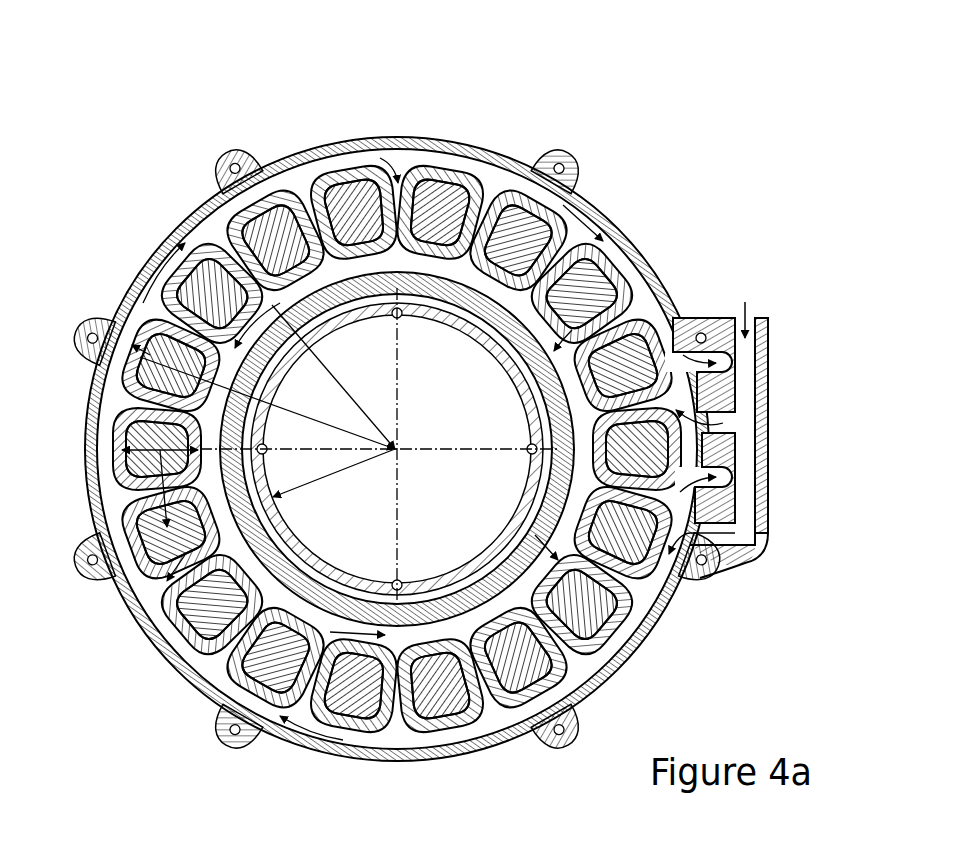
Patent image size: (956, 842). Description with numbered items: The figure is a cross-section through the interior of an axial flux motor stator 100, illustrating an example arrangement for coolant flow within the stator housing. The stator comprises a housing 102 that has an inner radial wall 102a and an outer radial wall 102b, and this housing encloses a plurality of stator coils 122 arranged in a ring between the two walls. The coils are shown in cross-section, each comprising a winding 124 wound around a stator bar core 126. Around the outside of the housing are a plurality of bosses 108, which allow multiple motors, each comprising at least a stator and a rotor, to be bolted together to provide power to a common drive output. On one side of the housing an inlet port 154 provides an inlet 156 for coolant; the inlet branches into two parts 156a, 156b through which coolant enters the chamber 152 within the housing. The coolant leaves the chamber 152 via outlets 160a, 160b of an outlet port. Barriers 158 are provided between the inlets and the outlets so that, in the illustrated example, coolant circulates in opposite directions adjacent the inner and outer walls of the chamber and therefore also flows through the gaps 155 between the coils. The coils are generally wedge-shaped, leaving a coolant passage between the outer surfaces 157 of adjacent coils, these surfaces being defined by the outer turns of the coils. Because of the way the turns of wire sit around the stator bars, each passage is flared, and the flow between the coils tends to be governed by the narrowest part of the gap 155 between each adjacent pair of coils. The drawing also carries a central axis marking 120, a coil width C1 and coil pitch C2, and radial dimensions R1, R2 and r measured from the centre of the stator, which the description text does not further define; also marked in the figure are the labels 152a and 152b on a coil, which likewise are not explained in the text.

The axial flux motor stator 100 is at (438, 80).
The housing 102 is at (366, 420).
The inner radial wall 102a is at (343, 290).
The outer radial wall 102b is at (316, 150).
The bosses 108 is at (558, 150).
The central axis 120 is at (400, 447).
The stator coils 122 is at (408, 732).
The winding 124 is at (192, 245).
The stator bar core 126 is at (193, 288).
The chamber 152 is at (402, 410).
The coil insulation 152a is at (298, 200).
The coil outer surface 152b is at (210, 215).
The inlet port 154 is at (768, 352).
The gaps between the coils 155 is at (615, 225).
The inlet 156 is at (755, 318).
The first inlet branch 156a is at (737, 436).
The second inlet branch 156b is at (735, 552).
The outer surfaces of the coils 157 is at (235, 627).
The barriers 158 is at (530, 425).
The first outlet 160a is at (715, 317).
The second outlet 160b is at (740, 480).
The coil width dimension C1 is at (120, 432).
The coil pitch dimension C2 is at (148, 500).
The inner radius R1 is at (333, 377).
The outer radius R2 is at (267, 403).
The bore radius r is at (334, 473).